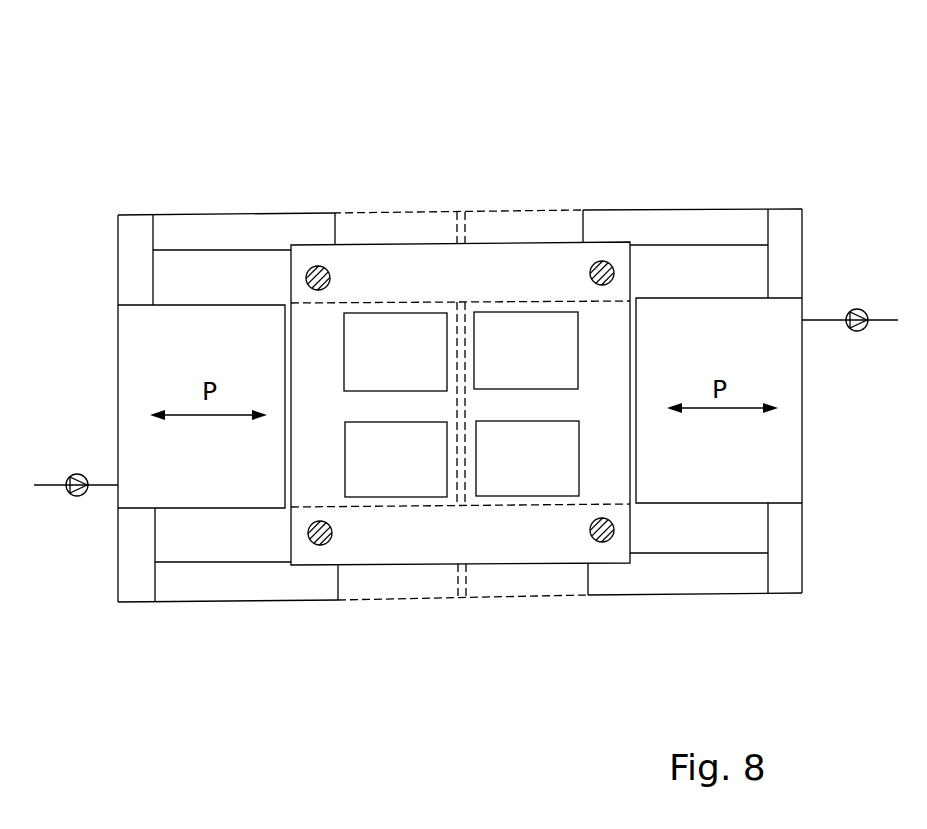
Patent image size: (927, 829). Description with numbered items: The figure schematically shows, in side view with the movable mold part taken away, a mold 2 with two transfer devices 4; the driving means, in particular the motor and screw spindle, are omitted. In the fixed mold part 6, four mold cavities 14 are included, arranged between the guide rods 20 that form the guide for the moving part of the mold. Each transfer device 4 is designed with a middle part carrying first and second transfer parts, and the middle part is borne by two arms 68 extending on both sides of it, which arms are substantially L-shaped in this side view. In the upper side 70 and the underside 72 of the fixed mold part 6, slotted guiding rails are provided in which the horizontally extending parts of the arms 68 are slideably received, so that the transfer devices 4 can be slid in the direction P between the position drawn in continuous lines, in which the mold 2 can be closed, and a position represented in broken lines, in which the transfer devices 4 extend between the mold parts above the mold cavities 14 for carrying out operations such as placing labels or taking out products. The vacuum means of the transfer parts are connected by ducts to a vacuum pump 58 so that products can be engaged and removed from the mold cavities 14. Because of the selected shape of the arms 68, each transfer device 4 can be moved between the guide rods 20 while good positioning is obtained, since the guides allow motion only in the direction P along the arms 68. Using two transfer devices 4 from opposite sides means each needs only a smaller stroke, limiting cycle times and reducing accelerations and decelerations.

The mold 2 is at (536, 185).
The transfer device 4 is at (100, 261).
The fixed mold part 6 is at (508, 585).
The mold cavity 14 is at (409, 370).
The guide rod 20 is at (604, 261).
The vacuum pump 58 is at (75, 497).
The arm 68 is at (698, 208).
The upper side 70 is at (383, 242).
The underside 72 is at (388, 610).